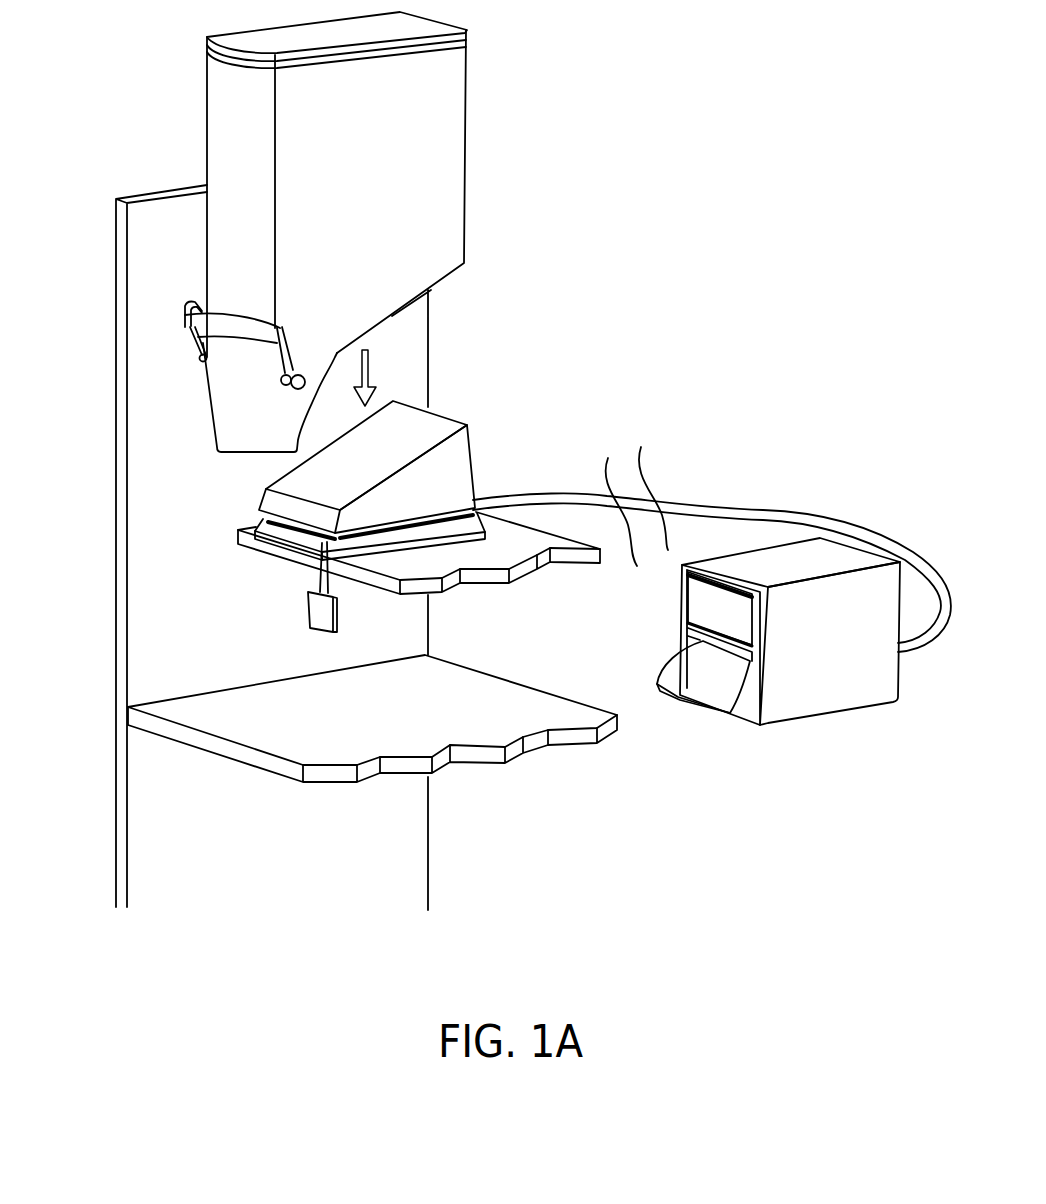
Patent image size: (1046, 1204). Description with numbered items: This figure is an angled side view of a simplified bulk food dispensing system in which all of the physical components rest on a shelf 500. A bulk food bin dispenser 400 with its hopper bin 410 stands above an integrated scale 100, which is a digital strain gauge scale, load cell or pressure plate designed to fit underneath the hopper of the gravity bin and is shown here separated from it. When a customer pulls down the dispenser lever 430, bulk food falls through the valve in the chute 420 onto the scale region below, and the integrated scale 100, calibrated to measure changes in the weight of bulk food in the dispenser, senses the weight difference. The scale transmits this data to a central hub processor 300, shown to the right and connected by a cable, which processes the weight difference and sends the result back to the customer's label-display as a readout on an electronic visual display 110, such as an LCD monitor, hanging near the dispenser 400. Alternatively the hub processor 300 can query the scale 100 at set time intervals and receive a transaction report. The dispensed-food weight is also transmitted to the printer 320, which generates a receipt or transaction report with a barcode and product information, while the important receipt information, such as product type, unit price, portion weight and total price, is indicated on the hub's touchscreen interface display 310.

The integrated scale 100 is at (477, 420).
The electronic visual display 110 is at (320, 610).
The hub processor 300 is at (736, 696).
The touchscreen interface display 310 is at (722, 603).
The printer 320 is at (747, 663).
The bulk food bin dispenser 400 is at (334, 297).
The hopper bin 410 is at (442, 218).
The chute 420 is at (233, 457).
The dispenser lever 430 is at (195, 323).
The shelf 500 is at (485, 577).